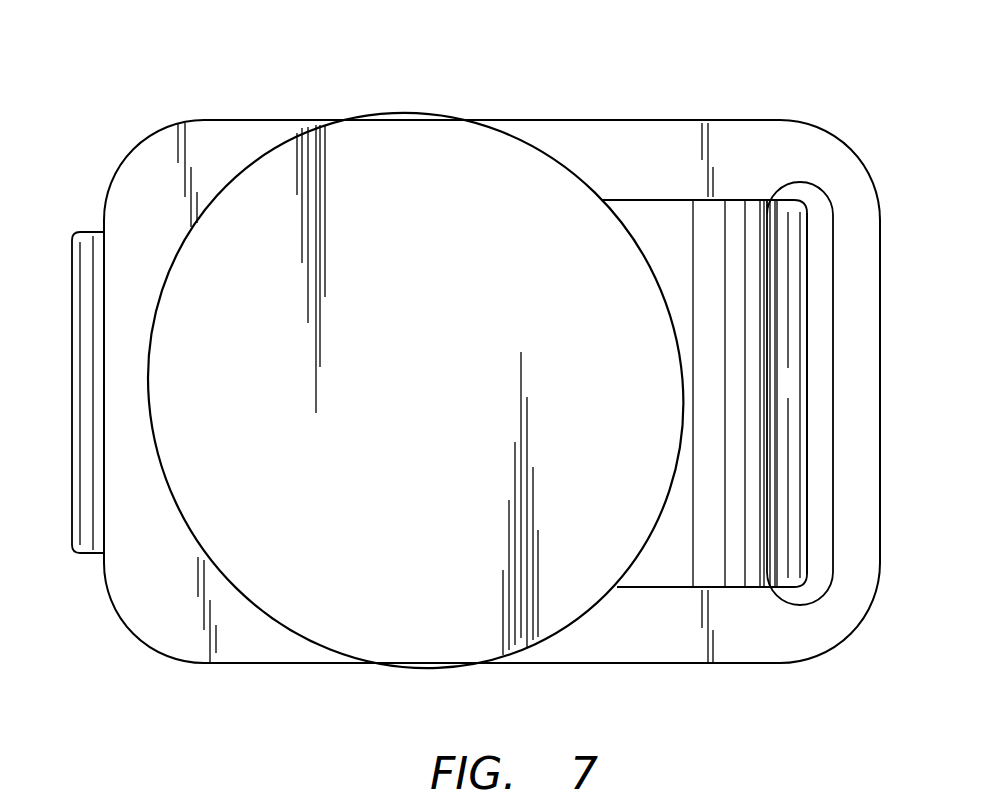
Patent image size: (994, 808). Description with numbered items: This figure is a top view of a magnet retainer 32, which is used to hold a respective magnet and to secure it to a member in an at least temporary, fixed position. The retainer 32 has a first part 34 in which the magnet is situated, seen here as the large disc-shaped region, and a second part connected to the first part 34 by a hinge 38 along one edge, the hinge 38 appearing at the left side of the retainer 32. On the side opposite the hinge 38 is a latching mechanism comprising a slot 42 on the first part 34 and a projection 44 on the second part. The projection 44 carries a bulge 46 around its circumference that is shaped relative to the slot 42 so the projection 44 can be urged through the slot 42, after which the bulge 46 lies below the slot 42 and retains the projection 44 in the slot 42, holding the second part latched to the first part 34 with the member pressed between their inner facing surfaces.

The retainer 32 is at (143, 100).
The first part 34 is at (632, 142).
The hinge 38 is at (76, 553).
The slot 42 is at (800, 605).
The projection 44 is at (785, 200).
The bulge 46 is at (807, 377).